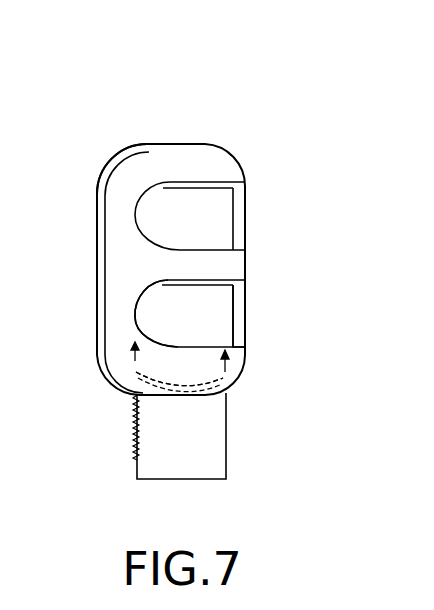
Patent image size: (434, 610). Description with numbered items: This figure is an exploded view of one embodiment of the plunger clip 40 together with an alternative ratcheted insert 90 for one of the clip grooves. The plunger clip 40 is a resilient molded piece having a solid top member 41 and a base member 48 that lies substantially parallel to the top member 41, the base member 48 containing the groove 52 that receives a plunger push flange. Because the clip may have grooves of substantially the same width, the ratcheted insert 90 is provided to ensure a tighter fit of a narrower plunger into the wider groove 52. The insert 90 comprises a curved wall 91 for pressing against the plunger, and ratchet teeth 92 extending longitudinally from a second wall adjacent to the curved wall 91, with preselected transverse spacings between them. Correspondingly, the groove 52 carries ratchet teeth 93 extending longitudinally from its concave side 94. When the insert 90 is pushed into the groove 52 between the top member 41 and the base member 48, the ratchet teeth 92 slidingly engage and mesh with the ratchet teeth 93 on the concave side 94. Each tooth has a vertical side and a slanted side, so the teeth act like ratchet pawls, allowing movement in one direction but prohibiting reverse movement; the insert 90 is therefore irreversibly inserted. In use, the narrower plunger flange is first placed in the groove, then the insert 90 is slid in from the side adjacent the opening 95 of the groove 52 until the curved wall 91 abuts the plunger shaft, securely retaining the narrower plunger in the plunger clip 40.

The plunger clip 40 is at (178, 118).
The base member 48 is at (130, 162).
The top member 41 is at (235, 222).
The groove 52 is at (240, 303).
The ratchet teeth 93 is at (138, 310).
The concave side 94 is at (137, 308).
The curved wall 91 is at (197, 384).
The opening 95 is at (243, 343).
The ratcheted insert 90 is at (214, 432).
The ratchet teeth 92 is at (138, 424).